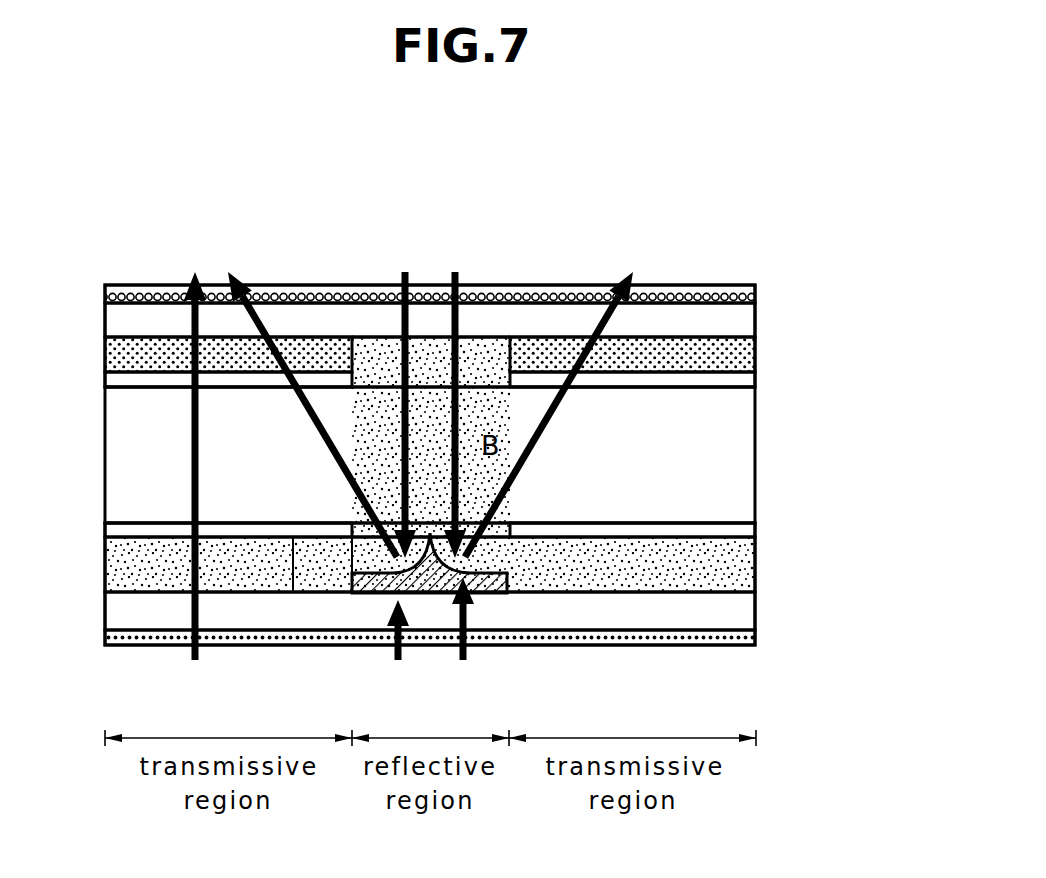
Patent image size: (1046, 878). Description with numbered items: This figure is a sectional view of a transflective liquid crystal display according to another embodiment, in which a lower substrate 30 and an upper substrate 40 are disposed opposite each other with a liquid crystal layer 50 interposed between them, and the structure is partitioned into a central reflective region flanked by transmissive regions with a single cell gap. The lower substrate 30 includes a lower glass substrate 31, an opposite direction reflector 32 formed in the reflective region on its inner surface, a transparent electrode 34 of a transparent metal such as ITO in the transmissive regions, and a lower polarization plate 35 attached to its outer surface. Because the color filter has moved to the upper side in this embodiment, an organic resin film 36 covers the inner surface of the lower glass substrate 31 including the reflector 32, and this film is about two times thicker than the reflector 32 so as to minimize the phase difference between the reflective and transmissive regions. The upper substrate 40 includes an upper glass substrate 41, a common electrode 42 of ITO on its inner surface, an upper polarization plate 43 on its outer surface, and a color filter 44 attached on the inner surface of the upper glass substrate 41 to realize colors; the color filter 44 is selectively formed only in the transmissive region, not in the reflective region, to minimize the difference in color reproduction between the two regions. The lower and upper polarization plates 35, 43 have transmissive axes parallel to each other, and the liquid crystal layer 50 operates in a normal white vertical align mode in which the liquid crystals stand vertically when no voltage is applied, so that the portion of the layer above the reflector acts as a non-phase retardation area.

The lower substrate 30 is at (860, 522).
The lower glass substrate 31 is at (745, 609).
The opposite direction reflector 32 is at (428, 593).
The transparent electrode 34 is at (745, 529).
The lower polarization plate 35 is at (745, 636).
The organic resin film 36 is at (745, 565).
The upper substrate 40 is at (860, 288).
The upper glass substrate 41 is at (745, 322).
The common electrode 42 is at (745, 383).
The upper polarization plate 43 is at (745, 296).
The color filter 44 is at (745, 355).
The liquid crystal layer 50 is at (745, 414).